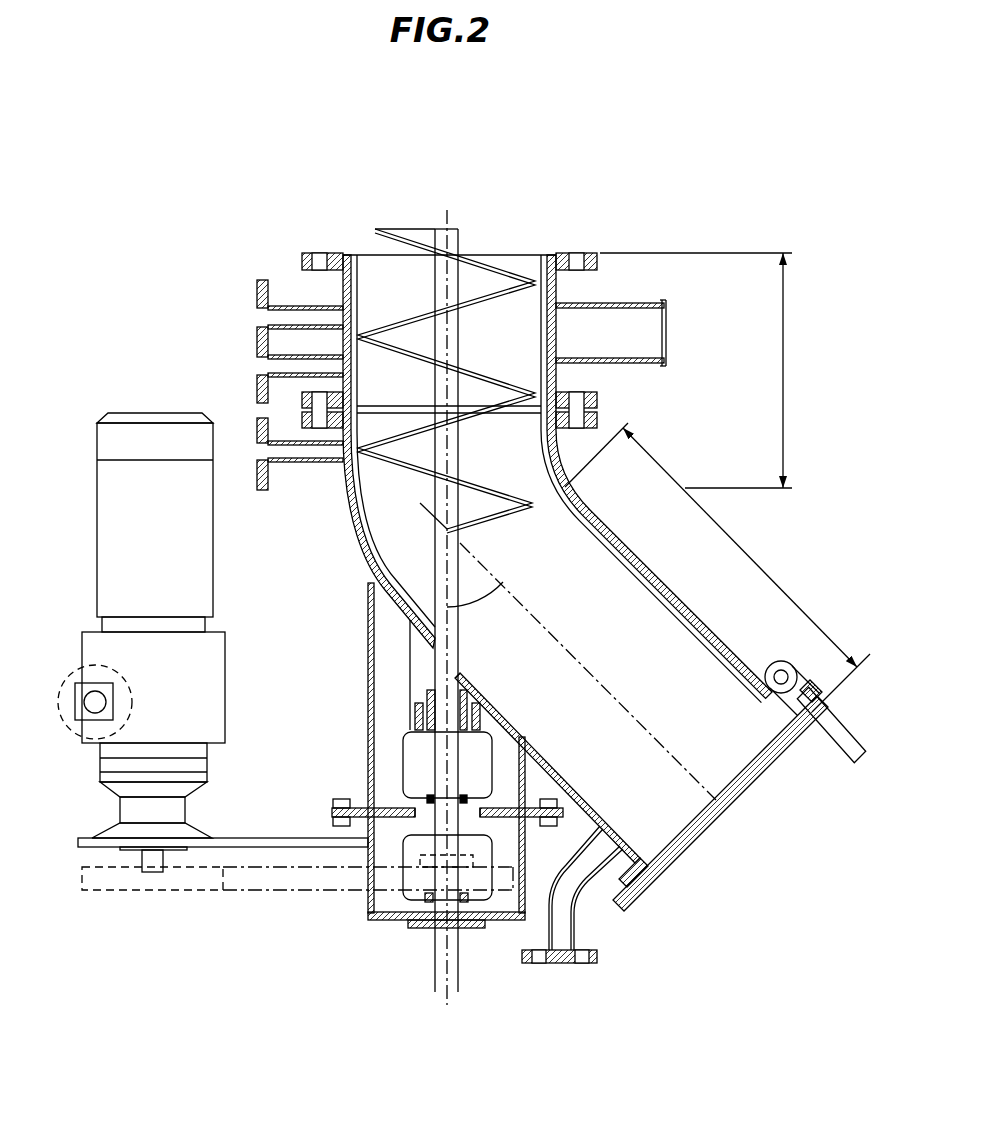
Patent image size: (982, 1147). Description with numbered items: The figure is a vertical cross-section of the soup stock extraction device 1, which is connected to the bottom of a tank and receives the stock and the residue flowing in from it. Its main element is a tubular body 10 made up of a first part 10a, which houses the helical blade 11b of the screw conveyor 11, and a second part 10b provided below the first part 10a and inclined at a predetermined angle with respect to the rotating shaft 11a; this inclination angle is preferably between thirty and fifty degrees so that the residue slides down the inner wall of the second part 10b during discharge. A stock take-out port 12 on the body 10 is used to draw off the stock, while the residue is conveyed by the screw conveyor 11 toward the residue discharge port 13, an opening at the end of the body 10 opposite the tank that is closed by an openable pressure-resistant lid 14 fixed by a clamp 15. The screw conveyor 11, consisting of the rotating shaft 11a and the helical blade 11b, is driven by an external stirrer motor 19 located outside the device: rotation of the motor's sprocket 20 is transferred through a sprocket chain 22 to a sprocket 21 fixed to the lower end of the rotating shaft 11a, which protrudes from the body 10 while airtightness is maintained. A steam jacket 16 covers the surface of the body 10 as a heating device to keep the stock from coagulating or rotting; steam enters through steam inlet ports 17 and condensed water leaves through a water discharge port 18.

The soup stock extraction device 1 is at (292, 172).
The tubular body 10 is at (527, 240).
The first part 10a is at (714, 370).
The second part 10b is at (640, 643).
The screw conveyor 11 is at (493, 162).
The rotating shaft 11a is at (441, 231).
The helical blade 11b is at (491, 275).
The stock take-out port 12 is at (618, 303).
The residue discharge port 13 is at (693, 827).
The lid 14 is at (745, 792).
The clamp 15 is at (843, 733).
The steam jacket 16 is at (337, 290).
The steam inlet ports 17 is at (257, 448).
The water discharge port 18 is at (566, 965).
The external stirrer motor 19 is at (90, 655).
The sprocket 20 is at (122, 880).
The sprocket 21 is at (388, 880).
The sprocket chain 22 is at (245, 880).